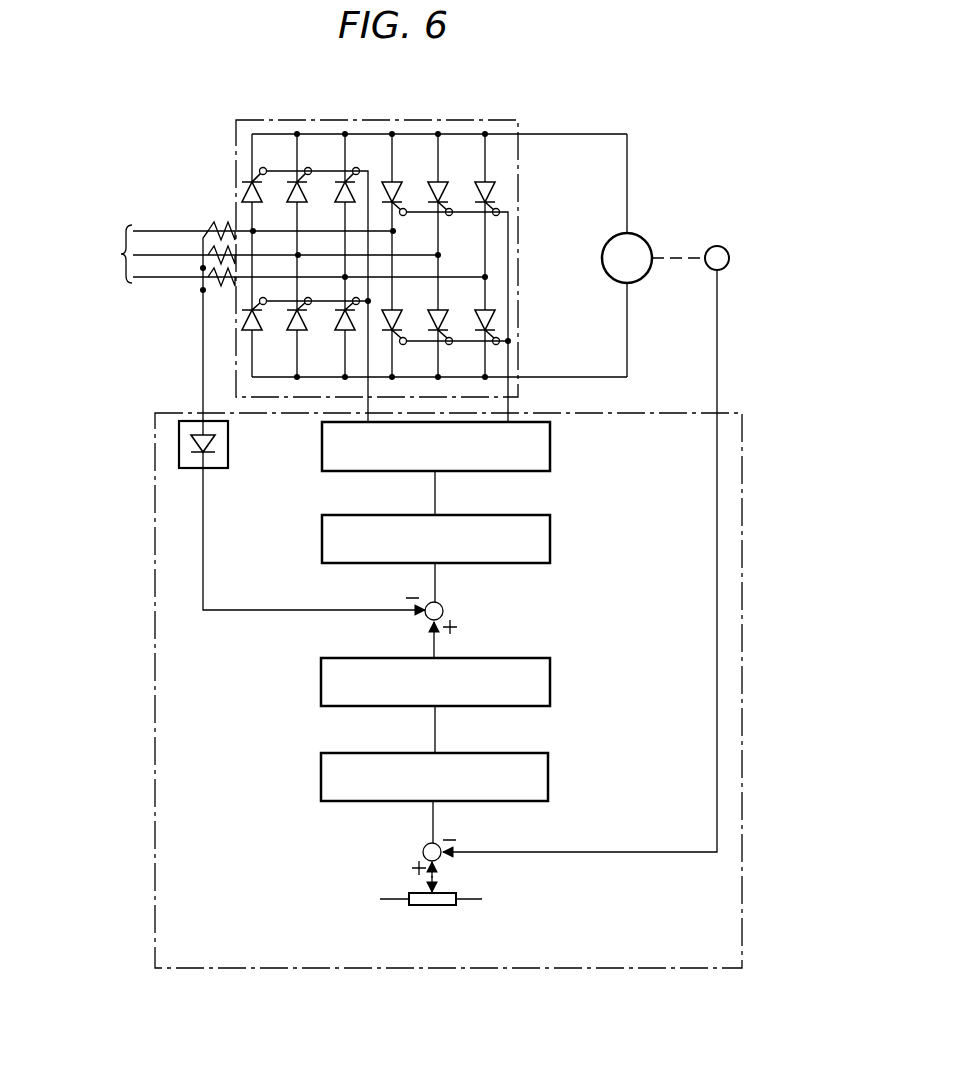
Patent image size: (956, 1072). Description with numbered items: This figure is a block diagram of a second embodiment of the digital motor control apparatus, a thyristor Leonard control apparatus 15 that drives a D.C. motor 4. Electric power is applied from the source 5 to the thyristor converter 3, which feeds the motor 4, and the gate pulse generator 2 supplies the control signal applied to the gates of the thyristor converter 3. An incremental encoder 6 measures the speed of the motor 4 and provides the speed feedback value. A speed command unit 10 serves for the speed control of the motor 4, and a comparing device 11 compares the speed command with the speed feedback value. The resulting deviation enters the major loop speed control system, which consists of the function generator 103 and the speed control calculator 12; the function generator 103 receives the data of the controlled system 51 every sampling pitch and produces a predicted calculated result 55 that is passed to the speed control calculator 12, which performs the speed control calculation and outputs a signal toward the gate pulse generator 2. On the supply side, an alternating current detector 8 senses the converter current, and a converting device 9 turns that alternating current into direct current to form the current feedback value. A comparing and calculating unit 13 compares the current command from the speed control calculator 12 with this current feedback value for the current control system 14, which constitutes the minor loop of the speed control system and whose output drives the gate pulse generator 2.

The gate pulse generator 2 is at (362, 472).
The thyristor converter 3 is at (268, 398).
The motor 4 is at (645, 238).
The source 5 is at (294, 254).
The incremental encoder 6 is at (719, 246).
The alternating current detector 8 is at (212, 283).
The alternating-to-direct current converting device 9 is at (179, 438).
The speed command unit 10 is at (430, 908).
The speed comparing device 11 is at (422, 851).
The speed control calculator 12 is at (321, 680).
The current comparing and calculating unit 13 is at (424, 618).
The current control system 14 is at (351, 565).
The thyristor Leonard control apparatus 15 is at (557, 972).
The data of the controlled system 51 is at (433, 818).
The calculated result 55 is at (434, 733).
The function generator 103 is at (321, 779).